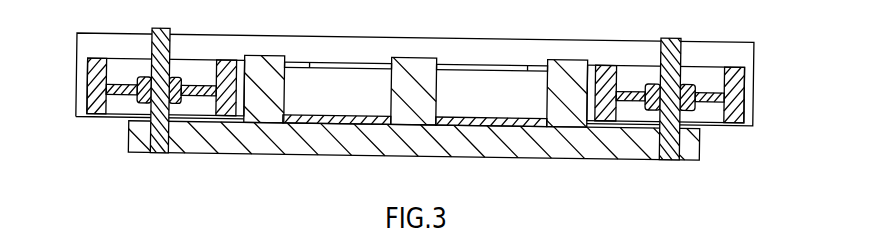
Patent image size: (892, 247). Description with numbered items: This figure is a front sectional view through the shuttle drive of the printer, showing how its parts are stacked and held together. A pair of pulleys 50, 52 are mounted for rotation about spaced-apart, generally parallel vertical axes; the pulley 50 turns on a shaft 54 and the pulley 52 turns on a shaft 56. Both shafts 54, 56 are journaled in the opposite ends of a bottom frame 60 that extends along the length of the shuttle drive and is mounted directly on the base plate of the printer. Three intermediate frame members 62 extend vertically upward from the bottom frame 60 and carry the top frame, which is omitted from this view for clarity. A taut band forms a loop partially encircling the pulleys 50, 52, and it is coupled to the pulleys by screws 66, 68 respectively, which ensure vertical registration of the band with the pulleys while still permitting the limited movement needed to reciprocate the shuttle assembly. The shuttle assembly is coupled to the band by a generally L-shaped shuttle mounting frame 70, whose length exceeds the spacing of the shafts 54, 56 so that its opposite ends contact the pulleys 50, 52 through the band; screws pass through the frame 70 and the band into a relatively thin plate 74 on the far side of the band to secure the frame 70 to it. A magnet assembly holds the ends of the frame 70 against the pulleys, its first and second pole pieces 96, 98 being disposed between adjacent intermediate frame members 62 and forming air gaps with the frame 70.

The pulley 50 is at (735, 115).
The pulley 52 is at (97, 112).
The shaft 54 is at (673, 38).
The shaft 56 is at (163, 28).
The bottom frame 60 is at (345, 140).
The intermediate frame members 62 is at (263, 56).
The screw 66 is at (728, 97).
The screw 68 is at (100, 88).
The shuttle mounting frame 70 is at (480, 38).
The thin plate 74 is at (325, 63).
The first pole piece 96 is at (322, 102).
The second pole piece 98 is at (485, 98).